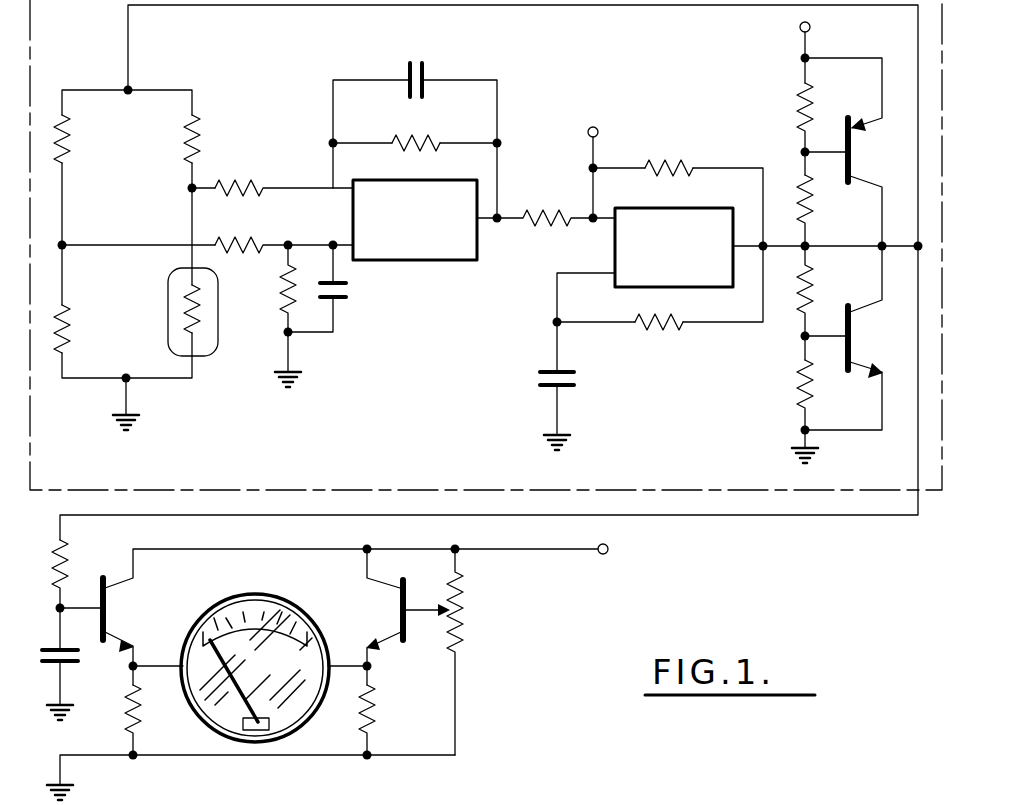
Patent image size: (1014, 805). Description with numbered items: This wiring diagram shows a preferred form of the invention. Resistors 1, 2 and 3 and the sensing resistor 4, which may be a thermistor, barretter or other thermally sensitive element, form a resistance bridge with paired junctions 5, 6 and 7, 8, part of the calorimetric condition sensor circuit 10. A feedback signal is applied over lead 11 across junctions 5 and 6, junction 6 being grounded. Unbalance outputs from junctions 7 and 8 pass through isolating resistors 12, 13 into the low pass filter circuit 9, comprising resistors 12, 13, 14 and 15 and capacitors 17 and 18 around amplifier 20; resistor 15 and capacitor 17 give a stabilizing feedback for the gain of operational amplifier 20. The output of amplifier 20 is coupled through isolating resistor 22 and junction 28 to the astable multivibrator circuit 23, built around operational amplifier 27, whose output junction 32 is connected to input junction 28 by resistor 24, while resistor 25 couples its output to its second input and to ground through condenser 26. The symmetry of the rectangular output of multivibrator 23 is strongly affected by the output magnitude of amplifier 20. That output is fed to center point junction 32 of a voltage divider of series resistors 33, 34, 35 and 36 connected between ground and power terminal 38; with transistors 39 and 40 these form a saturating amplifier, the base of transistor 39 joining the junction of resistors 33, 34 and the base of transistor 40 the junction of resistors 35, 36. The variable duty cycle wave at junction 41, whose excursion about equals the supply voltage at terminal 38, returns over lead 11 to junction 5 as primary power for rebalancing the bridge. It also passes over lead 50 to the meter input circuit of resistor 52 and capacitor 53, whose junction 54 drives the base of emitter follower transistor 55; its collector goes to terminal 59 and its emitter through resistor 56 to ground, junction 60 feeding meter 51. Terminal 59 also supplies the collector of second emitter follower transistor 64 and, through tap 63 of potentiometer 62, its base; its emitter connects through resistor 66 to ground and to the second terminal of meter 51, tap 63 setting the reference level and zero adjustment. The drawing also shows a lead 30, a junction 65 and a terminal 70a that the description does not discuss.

The resistor 1 is at (72, 142).
The resistor 2 is at (72, 333).
The resistor 3 is at (202, 142).
The sensing resistor 4 is at (168, 302).
The bridge junction 5 is at (130, 88).
The bridge junction 6 is at (124, 380).
The bridge junction 7 is at (64, 243).
The bridge junction 8 is at (190, 188).
The low pass filter circuit 9 is at (415, 121).
The calorimetric condition sensor circuit 10 is at (222, 490).
The lead 11 is at (243, 5).
The isolating resistor 12 is at (238, 185).
The isolating resistor 13 is at (242, 242).
The resistor 14 is at (286, 298).
The resistor 15 is at (422, 140).
The capacitor 17 is at (407, 72).
The capacitor 18 is at (338, 300).
The amplifier 20 is at (405, 262).
The isolating resistor 22 is at (551, 216).
The astable multivibrator circuit 23 is at (662, 236).
The resistor 24 is at (686, 161).
The resistor 25 is at (662, 330).
The condenser 26 is at (537, 384).
The operational amplifier 27 is at (616, 276).
The junction 28 is at (591, 222).
The conductor 30 is at (548, 277).
The output junction 32 is at (808, 245).
The resistor 33 is at (800, 105).
The resistor 34 is at (808, 208).
The resistor 35 is at (808, 286).
The resistor 36 is at (800, 383).
The terminal 38 is at (798, 31).
The transistor 39 is at (853, 162).
The transistor 40 is at (853, 294).
The junction 41 is at (899, 244).
The lead 50 is at (805, 517).
The meter 51 is at (266, 599).
The resistor 52 is at (69, 555).
The capacitor 53 is at (72, 665).
The junction 54 is at (63, 611).
The emitter follower transistor 55 is at (114, 600).
The resistor 56 is at (138, 713).
The terminal 59 is at (609, 548).
The junction 60 is at (136, 658).
The potentiometer 62 is at (461, 640).
The tap 63 is at (432, 618).
The second emitter follower transistor 64 is at (398, 617).
The junction 65 is at (376, 670).
The resistor 66 is at (361, 711).
The terminal 70a is at (593, 128).